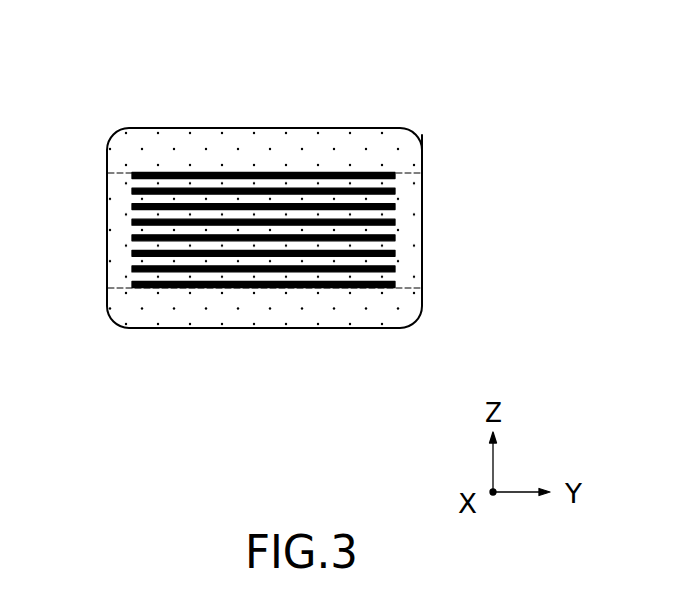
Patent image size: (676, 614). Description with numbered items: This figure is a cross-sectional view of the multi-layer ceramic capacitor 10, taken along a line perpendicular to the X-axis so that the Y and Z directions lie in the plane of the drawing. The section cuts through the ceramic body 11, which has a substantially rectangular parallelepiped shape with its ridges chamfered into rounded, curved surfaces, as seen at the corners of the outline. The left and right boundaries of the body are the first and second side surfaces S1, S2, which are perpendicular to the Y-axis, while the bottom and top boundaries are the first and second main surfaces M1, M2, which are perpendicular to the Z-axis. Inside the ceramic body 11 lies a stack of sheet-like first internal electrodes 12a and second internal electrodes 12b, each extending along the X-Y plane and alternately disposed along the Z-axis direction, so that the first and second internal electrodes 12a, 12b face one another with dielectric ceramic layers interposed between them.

The multi-layer ceramic capacitor 10 is at (397, 90).
The ceramic body 11 is at (267, 120).
The first internal electrode 12a is at (172, 270).
The second internal electrode 12b is at (293, 282).
The first main surface M1 is at (155, 330).
The second main surface M2 is at (158, 127).
The first side surface S1 is at (108, 190).
The second side surface S2 is at (422, 153).